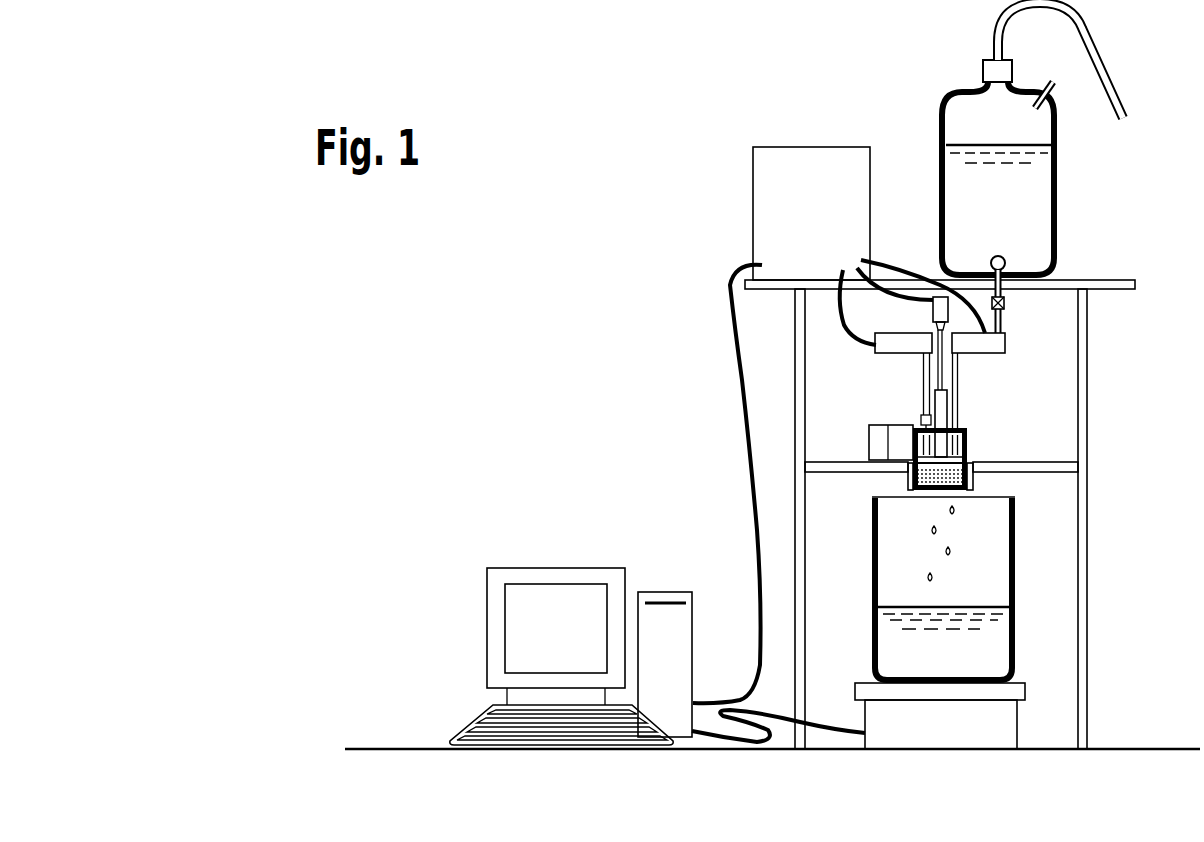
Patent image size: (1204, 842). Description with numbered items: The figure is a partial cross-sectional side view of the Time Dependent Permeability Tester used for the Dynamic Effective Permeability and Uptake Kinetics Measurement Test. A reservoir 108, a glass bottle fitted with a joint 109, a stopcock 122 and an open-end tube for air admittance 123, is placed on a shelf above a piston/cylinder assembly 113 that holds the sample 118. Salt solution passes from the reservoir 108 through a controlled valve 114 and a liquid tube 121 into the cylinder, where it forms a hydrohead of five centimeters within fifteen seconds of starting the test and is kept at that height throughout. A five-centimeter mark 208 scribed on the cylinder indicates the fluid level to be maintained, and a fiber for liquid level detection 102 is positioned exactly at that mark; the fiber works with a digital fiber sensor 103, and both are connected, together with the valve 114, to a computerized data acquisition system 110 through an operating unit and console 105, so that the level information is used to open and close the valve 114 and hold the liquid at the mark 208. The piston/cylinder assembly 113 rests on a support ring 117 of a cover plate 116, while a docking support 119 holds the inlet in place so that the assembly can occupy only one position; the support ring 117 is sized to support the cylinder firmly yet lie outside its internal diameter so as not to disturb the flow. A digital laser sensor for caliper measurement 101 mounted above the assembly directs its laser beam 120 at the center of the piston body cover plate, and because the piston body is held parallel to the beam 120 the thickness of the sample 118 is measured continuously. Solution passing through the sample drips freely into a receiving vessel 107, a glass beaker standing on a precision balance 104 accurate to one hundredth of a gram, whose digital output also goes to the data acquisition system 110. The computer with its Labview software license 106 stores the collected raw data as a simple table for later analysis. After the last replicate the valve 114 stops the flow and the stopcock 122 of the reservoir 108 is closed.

The digital laser sensor for caliper measurement 101 is at (933, 310).
The fiber for liquid level detection 102 is at (912, 447).
The digital fiber sensor 103 is at (876, 345).
The precision balance 104 is at (963, 749).
The operating unit and console 105 is at (767, 192).
The Labview software license 106 is at (688, 640).
The receiving vessel 107 is at (872, 577).
The reservoir 108 is at (1057, 207).
The joint 109 is at (1005, 263).
The computerized data acquisition system 110 is at (668, 592).
The piston/cylinder assembly 113 is at (968, 437).
The controlled valve 114 is at (1007, 345).
The cover plate 116 is at (1038, 472).
The support ring 117 is at (908, 487).
The sample 118 is at (950, 490).
The docking support 119 is at (873, 455).
The laser beam 120 is at (926, 370).
The liquid tube 121 is at (960, 400).
The stopcock 122 is at (1007, 303).
The open-end tube for air admittance 123 is at (1055, 93).
The 5 cm mark 208 is at (973, 462).